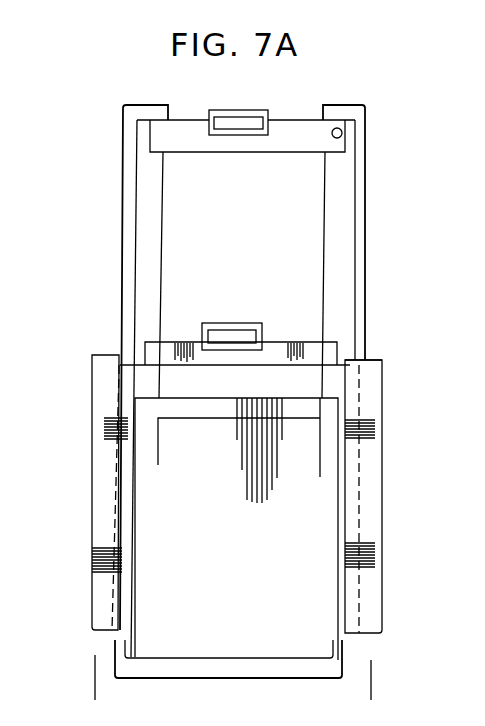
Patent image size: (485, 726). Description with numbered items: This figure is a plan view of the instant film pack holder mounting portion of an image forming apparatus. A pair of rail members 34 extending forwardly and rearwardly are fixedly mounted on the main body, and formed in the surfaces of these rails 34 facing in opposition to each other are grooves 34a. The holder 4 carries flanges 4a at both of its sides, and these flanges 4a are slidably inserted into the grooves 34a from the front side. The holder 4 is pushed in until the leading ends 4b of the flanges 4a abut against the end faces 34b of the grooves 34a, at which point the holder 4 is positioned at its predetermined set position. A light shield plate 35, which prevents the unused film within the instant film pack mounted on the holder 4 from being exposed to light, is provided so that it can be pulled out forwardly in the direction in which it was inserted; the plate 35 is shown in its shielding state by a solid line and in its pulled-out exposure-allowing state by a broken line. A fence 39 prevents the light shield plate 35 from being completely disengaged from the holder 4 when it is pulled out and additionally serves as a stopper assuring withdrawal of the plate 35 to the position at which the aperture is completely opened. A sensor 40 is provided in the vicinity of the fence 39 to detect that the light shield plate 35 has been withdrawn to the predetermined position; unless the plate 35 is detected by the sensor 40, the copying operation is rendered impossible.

The holder 4 is at (323, 647).
The flanges 4a is at (352, 593).
The leading ends 4b is at (343, 360).
The rail members 34 is at (100, 476).
The grooves 34a is at (119, 521).
The end faces 34b is at (348, 362).
The light shield plate 35 is at (318, 347).
The fence 39 is at (366, 130).
The sensor 40 is at (338, 139).